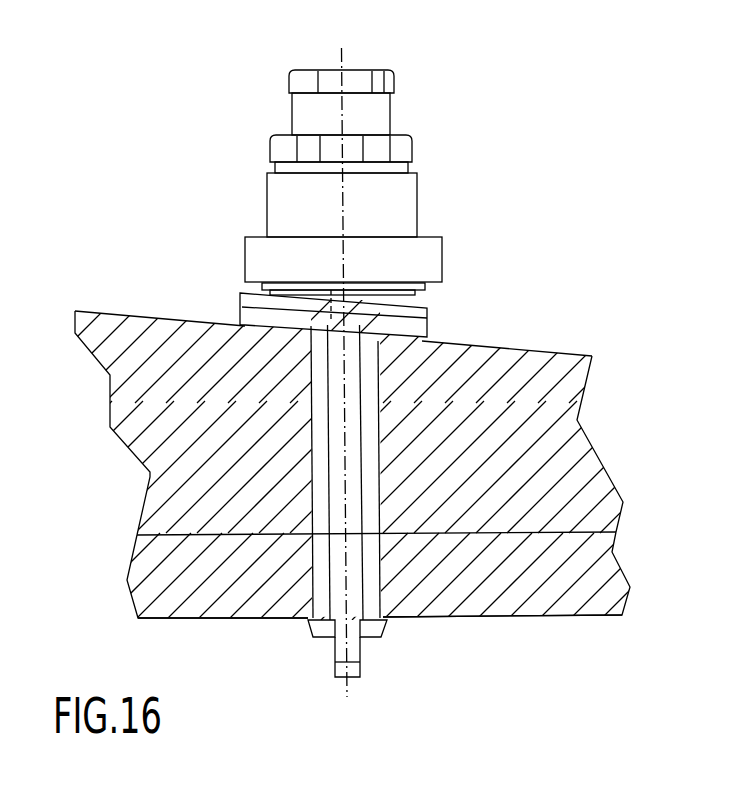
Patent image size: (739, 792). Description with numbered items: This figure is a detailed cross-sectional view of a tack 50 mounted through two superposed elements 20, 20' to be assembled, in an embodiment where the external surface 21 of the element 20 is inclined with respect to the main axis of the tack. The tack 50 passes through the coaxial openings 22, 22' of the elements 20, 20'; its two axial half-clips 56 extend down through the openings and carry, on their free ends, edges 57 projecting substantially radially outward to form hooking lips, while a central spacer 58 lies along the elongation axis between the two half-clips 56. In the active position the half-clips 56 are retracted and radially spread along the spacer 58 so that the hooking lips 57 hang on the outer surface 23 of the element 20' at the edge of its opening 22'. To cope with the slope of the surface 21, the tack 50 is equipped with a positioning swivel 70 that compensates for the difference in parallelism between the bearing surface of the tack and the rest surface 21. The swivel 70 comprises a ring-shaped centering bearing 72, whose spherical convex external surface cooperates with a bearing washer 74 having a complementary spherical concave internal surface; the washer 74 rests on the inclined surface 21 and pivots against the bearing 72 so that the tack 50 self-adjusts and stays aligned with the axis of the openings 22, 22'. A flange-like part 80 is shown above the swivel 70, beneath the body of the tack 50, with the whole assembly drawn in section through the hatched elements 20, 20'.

The tack 50 is at (425, 143).
The flange 80 is at (246, 258).
The centering bearing 72 is at (405, 277).
The positioning swivel 70 is at (445, 316).
The bearing washer 74 is at (247, 302).
The external surface 21 is at (568, 351).
The element 20 is at (369, 343).
The element 20' is at (359, 576).
The opening 22 is at (226, 429).
The opening 22' is at (409, 608).
The edges 57 is at (315, 638).
The axial half-clips 56 is at (322, 551).
The central spacer 58 is at (357, 666).
The outer surface 23 is at (523, 617).